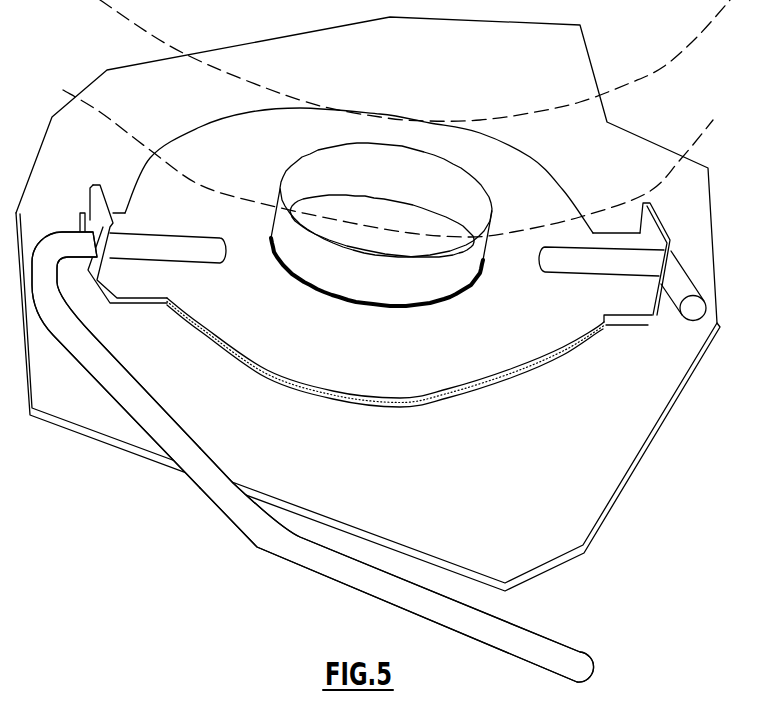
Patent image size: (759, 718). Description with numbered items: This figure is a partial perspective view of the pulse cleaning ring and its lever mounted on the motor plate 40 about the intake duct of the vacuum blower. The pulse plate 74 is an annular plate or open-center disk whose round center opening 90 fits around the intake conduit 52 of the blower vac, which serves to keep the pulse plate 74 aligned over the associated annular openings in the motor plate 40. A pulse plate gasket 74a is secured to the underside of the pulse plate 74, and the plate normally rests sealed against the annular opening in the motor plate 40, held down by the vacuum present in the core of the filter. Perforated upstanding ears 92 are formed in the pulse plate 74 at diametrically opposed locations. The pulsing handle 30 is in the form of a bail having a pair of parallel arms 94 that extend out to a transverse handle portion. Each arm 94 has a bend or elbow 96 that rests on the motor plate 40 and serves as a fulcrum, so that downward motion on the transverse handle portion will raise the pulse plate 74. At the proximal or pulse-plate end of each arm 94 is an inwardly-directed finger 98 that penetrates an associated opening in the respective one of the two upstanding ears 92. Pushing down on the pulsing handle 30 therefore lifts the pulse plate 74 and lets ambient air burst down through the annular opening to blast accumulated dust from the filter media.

The pulsing handle 30 is at (189, 502).
The motor plate 40 is at (607, 498).
The intake conduit 52 is at (287, 240).
The pulse plate 74 is at (483, 382).
The pulse plate gasket 74a is at (493, 407).
The round center opening 90 is at (410, 310).
The upstanding ears 92 is at (93, 193).
The arms 94 is at (151, 439).
The bend or elbow 96 is at (257, 551).
The inwardly-directed finger 98 is at (186, 233).